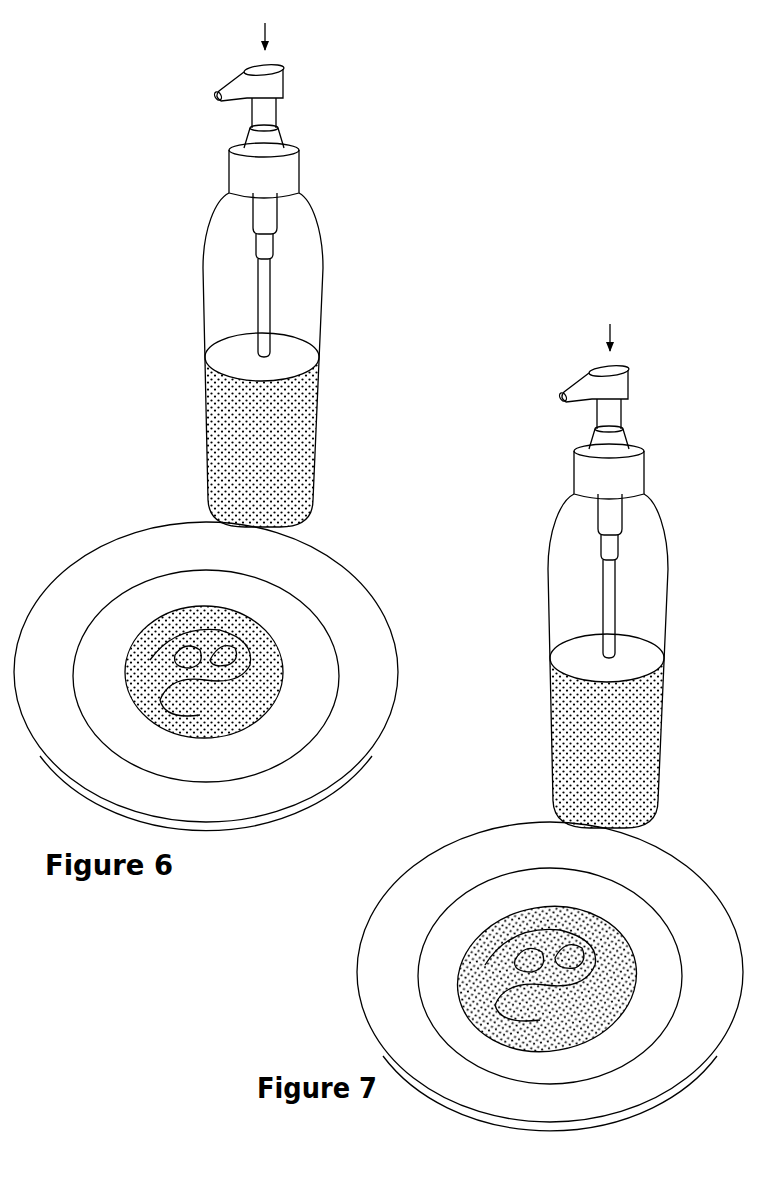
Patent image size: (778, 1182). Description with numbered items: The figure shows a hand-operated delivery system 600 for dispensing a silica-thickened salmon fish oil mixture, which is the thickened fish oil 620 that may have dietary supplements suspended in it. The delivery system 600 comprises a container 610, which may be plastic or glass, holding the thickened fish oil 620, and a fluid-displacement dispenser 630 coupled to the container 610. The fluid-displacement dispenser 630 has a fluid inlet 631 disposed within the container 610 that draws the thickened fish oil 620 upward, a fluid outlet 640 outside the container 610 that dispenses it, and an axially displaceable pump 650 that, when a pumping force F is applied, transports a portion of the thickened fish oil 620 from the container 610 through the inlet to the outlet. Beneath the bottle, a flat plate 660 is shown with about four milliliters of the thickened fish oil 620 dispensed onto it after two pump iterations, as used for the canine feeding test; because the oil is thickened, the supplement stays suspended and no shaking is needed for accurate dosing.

In FIG. 6, the delivery system 600 is at (344, 192).
In FIG. 7, the delivery system 600 is at (624, 576).
In FIG. 6, the container 610 is at (324, 258).
In FIG. 7, the container 610 is at (646, 661).
In FIG. 6, the thickened fish oil 620 is at (290, 452).
In FIG. 7, the thickened fish oil 620 is at (640, 720).
In FIG. 6, the fluid-displacement dispenser 630 is at (322, 96).
In FIG. 7, the fluid-displacement dispenser 630 is at (614, 491).
In FIG. 6, the fluid inlet 631 is at (258, 275).
In FIG. 7, the fluid inlet 631 is at (558, 576).
In FIG. 6, the fluid outlet 640 is at (216, 96).
In FIG. 7, the fluid outlet 640 is at (559, 383).
In FIG. 6, the axially displaceable pump 650 is at (190, 148).
In FIG. 7, the axially displaceable pump 650 is at (568, 473).
In FIG. 6, the dish 660 is at (190, 558).
In FIG. 7, the dish 660 is at (545, 860).